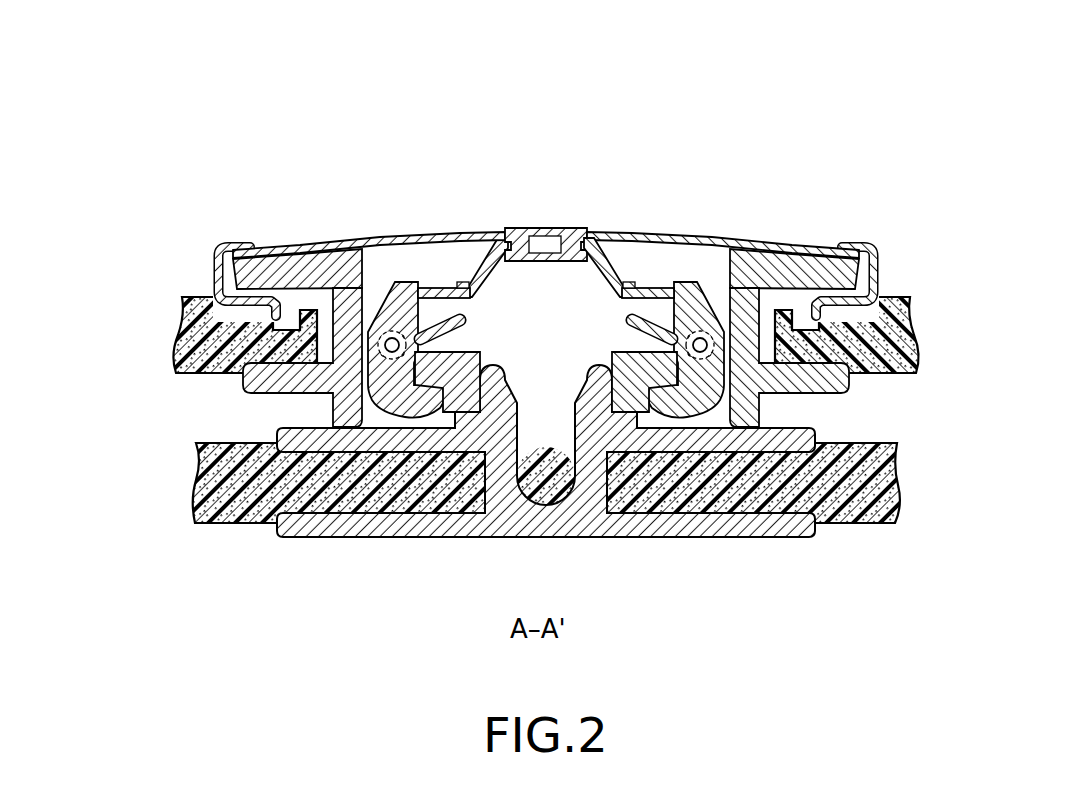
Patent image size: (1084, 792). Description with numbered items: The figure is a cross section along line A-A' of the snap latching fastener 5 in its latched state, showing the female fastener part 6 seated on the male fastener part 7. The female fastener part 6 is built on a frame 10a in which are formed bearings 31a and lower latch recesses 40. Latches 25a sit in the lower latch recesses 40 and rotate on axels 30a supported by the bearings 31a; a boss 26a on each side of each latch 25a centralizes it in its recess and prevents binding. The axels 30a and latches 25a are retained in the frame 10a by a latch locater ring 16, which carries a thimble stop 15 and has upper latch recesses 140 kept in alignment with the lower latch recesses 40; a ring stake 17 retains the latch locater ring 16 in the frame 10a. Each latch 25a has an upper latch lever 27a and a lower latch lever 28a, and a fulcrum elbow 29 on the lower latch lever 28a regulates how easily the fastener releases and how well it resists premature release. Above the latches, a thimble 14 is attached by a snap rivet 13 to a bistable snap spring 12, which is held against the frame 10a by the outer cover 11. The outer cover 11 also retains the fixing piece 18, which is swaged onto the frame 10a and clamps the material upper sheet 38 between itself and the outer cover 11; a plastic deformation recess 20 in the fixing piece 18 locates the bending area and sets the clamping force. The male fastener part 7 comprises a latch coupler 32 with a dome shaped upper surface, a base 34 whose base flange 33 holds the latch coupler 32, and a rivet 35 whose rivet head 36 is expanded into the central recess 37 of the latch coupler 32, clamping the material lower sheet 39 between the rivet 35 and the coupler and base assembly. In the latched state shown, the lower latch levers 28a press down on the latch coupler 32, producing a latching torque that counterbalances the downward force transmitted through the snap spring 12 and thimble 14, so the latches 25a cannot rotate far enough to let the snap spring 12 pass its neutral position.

The snap latching fastener 5 is at (797, 109).
The female fastener part 6 is at (508, 311).
The male fastener part 7 is at (499, 532).
The frame 10a is at (307, 252).
The outer cover 11 is at (220, 243).
The snap spring 12 is at (352, 238).
The snap rivet 13 is at (507, 226).
The thimble 14 is at (458, 266).
The thimble stop 15 is at (648, 252).
The latch locater ring 16 is at (697, 252).
The ring stake 17 is at (730, 254).
The fixing piece 18 is at (262, 260).
The plastic deformation recess 20 is at (815, 403).
The latch 25a is at (373, 401).
The boss 26a is at (388, 332).
The upper latch lever 27a is at (618, 250).
The lower latch lever 28a is at (630, 321).
The fulcrum elbow 29 is at (613, 346).
The axel 30a is at (782, 246).
The bearing 31a is at (704, 350).
The latch coupler 32 is at (468, 350).
The base flange 33 is at (637, 452).
The base 34 is at (790, 442).
The rivet 35 is at (575, 538).
The rivet head 36 is at (506, 366).
The central recess 37 is at (586, 375).
The material upper sheet 38 is at (178, 297).
The material lower sheet 39 is at (231, 523).
The lower latch recess 40 is at (737, 375).
The upper latch recess 140 is at (660, 318).